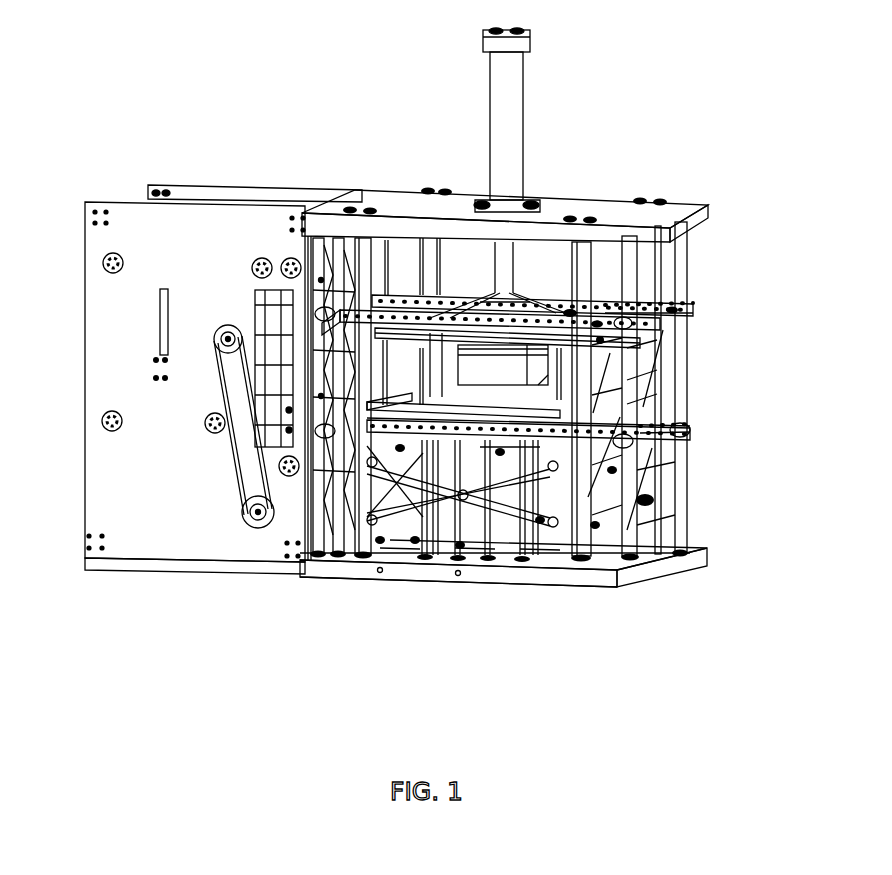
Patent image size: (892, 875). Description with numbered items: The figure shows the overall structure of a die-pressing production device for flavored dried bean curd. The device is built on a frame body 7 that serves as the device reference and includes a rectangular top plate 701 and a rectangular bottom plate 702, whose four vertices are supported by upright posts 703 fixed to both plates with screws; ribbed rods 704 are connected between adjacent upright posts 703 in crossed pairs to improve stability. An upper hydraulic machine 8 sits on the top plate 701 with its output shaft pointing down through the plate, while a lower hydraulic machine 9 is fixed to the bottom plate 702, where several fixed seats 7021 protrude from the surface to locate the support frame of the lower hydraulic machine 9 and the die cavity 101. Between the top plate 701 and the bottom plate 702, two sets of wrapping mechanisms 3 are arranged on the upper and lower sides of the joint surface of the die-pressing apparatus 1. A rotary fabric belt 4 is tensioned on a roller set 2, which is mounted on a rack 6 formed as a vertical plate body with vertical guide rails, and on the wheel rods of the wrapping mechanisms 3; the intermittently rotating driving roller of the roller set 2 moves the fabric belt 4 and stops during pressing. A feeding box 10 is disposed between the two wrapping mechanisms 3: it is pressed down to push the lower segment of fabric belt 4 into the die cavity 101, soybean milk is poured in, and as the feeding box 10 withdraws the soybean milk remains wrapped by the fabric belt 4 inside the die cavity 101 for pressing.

The die-pressing apparatus 1 is at (547, 262).
The roller set 2 is at (122, 258).
The wrapping mechanism 3 is at (492, 282).
The fabric belt 4 is at (345, 562).
The rack 6 is at (223, 358).
The frame body 7 is at (544, 423).
The upper hydraulic machine 8 is at (507, 162).
The lower hydraulic machine 9 is at (473, 567).
The feeding box 10 is at (508, 371).
The die cavity 101 is at (397, 563).
The top plate 701 is at (660, 225).
The bottom plate 702 is at (657, 575).
The upright post 703 is at (620, 572).
The ribbed rod 704 is at (677, 557).
The fixed seat 7021 is at (540, 563).